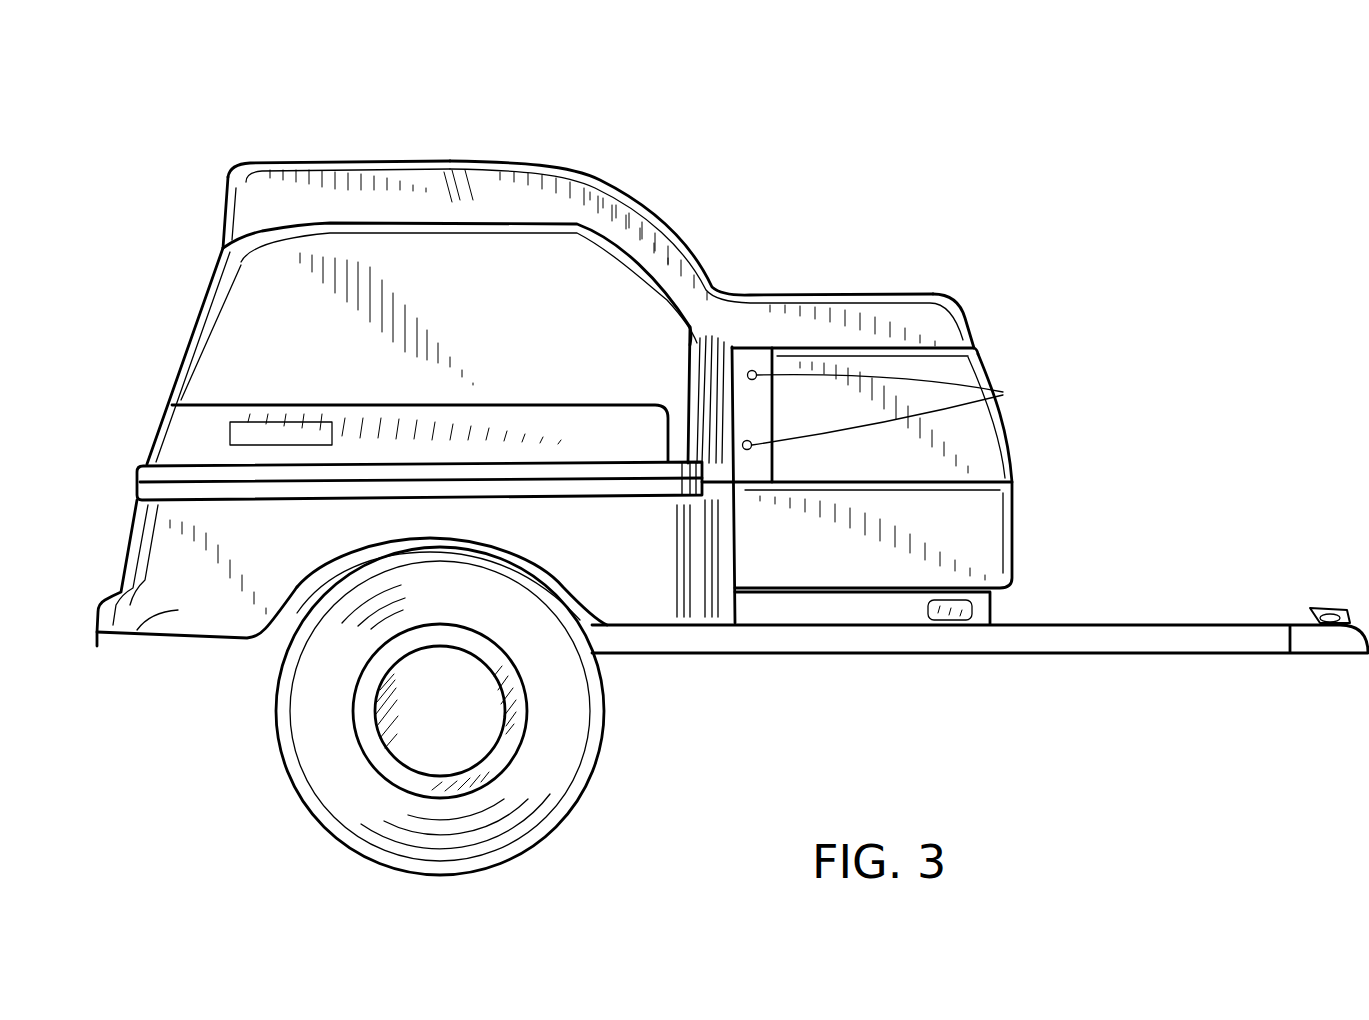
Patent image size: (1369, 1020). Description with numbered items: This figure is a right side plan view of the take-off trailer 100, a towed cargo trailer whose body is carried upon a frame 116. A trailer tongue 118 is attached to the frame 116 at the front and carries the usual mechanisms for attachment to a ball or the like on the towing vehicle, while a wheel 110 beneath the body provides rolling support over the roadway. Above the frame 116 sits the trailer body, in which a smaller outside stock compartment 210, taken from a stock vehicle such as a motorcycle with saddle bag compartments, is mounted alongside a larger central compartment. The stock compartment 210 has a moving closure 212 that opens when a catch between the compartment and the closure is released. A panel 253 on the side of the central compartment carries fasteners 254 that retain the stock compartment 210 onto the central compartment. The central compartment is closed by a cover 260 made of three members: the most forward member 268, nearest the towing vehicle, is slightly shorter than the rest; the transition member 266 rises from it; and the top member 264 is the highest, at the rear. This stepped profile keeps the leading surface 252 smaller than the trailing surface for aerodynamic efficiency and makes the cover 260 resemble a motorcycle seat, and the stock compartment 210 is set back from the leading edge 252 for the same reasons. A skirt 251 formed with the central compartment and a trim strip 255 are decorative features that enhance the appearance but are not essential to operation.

The take-off trailer 100 is at (930, 118).
The wheel 110 is at (300, 748).
The frame 116 is at (985, 608).
The trailer tongue 118 is at (1317, 607).
The stock compartment 210 is at (723, 345).
The moving closure 212 is at (227, 347).
The skirt 251 is at (137, 638).
The leading surface 252 is at (1013, 497).
The panel 253 is at (757, 359).
The fastener 254 is at (1010, 393).
The trim strip 255 is at (138, 478).
The cover 260 is at (372, 161).
The top member 264 is at (480, 163).
The transition member 266 is at (670, 228).
The forward member 268 is at (890, 294).